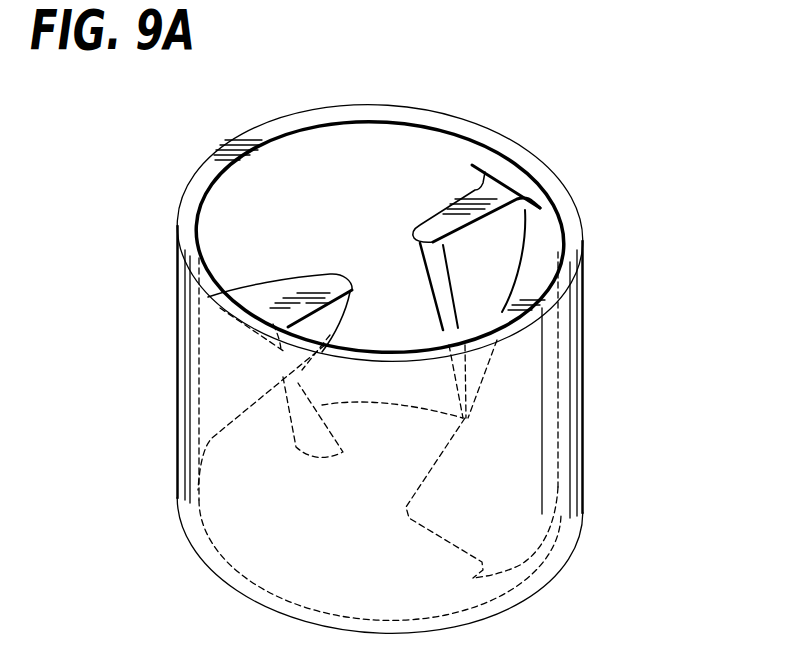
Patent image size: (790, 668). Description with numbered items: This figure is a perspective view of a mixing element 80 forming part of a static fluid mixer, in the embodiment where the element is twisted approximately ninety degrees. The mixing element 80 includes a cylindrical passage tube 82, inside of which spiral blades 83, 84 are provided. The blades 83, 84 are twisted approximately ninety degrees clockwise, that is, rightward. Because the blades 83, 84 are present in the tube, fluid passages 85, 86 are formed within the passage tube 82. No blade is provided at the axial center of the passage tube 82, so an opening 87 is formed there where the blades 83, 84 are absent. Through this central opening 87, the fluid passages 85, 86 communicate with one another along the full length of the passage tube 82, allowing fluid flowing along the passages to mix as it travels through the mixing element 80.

The mixing element 80 is at (604, 403).
The cylindrical passage tube 82 is at (583, 322).
The spiral blade 83 is at (450, 222).
The spiral blade 84 is at (224, 304).
The fluid passage 85 is at (335, 236).
The fluid passage 86 is at (490, 262).
The opening 87 is at (379, 257).